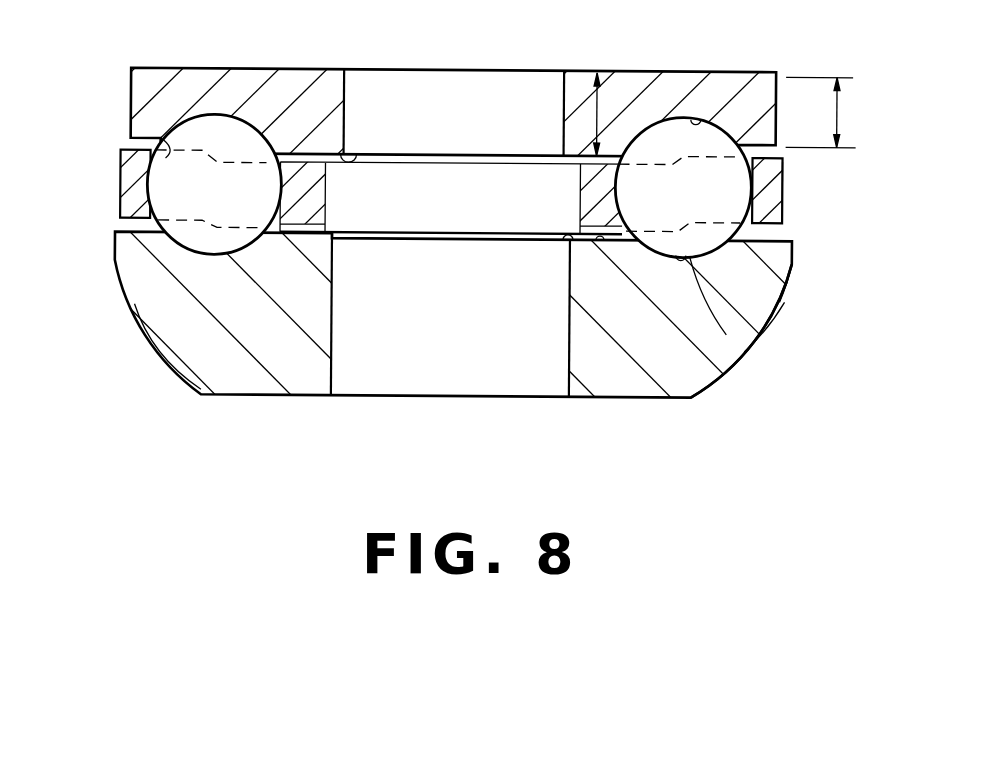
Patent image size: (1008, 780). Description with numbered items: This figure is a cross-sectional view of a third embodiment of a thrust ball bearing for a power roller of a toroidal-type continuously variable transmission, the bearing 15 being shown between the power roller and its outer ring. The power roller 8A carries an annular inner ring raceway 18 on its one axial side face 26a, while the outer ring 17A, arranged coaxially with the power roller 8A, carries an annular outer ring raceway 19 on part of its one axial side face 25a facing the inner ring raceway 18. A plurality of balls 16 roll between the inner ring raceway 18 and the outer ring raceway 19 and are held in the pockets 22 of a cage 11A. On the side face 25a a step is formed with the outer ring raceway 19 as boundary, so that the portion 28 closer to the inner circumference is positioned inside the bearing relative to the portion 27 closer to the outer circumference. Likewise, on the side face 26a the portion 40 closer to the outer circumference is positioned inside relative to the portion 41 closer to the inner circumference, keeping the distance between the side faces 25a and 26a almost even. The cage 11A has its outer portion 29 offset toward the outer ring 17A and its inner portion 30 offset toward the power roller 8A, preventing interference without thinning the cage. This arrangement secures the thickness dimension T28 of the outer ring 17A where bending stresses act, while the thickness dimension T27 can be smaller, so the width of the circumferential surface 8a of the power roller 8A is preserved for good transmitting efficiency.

The outer ring 17A is at (168, 95).
The ball 15 is at (222, 130).
The pockets 22 is at (165, 137).
The balls 16 is at (172, 190).
The one axial side face of the outer ring 25a is at (357, 165).
The portion closer to the inner circumference 28 is at (565, 170).
The outer ring raceway 19 is at (695, 116).
The portion closer to the outer circumference 27 is at (773, 170).
The portion close to the outer circumference of the cage 29 is at (773, 187).
The cage 11A is at (773, 227).
The portion closer to the outer circumference 40 is at (780, 292).
The circumferential surface 8a is at (772, 325).
The inner ring raceway 18 is at (743, 352).
The power roller 8A is at (665, 372).
The portion close to the inner circumference of the cage 30 is at (568, 212).
The one axial side face of the power roller 26a is at (572, 234).
The portion closer to the inner circumference 41 is at (598, 243).
The thickness dimension of the outer ring in portion 28 T28 is at (598, 114).
The thickness dimension of the outer ring in portion 27 T27 is at (823, 112).